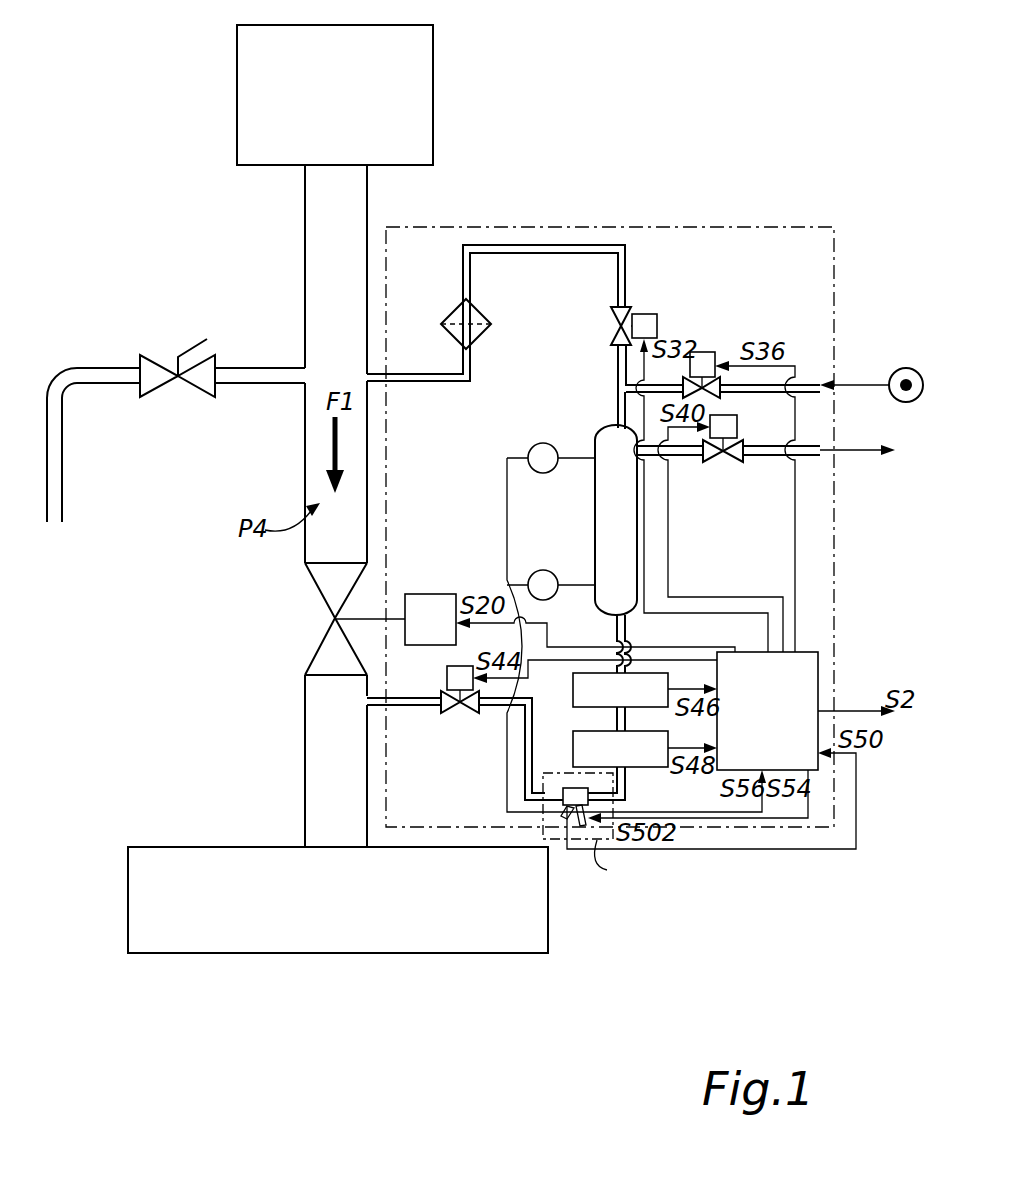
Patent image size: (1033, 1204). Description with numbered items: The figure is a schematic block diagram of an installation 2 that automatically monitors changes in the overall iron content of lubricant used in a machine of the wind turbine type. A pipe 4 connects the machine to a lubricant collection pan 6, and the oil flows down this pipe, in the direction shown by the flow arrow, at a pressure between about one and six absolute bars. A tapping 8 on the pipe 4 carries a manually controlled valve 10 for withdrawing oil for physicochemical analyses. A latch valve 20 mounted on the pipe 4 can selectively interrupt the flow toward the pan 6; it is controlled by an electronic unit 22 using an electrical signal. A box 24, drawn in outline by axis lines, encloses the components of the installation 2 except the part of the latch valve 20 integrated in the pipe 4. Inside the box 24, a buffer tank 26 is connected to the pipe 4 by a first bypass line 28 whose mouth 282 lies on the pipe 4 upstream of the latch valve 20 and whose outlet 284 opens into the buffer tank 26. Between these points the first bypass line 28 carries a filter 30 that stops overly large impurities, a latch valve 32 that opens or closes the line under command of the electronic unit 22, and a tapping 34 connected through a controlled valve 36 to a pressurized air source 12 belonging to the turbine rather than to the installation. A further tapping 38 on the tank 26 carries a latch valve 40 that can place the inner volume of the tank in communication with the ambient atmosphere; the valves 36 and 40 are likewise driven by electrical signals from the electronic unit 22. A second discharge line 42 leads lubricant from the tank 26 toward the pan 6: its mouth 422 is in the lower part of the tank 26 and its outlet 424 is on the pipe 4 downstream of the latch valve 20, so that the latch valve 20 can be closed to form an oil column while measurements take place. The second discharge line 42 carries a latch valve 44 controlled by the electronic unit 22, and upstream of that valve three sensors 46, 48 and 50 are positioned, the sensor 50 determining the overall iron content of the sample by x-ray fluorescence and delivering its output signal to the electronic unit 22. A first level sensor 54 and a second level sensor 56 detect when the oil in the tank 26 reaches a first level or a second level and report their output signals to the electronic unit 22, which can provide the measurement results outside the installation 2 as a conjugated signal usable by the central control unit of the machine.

The installation 2 is at (780, 210).
The pipe 4 is at (323, 212).
The lubricant collection pan 6 is at (338, 900).
The tapping 8 is at (287, 375).
The valve 10 is at (155, 363).
The pressurized air source 12 is at (912, 368).
The latch valve 20 is at (396, 619).
The electronic unit 22 is at (767, 711).
The box 24 is at (836, 277).
The buffer tank 26 is at (605, 532).
The first bypass line 28 is at (532, 245).
The filter 30 is at (480, 313).
The latch valve 32 is at (650, 314).
The tapping 34 is at (635, 384).
The controlled valve 36 is at (708, 352).
The tapping 38 is at (683, 457).
The latch valve 40 is at (733, 462).
The second discharge line 42 is at (527, 730).
The latch valve 44 is at (447, 679).
The sensor 46 is at (620, 690).
The sensor 48 is at (620, 749).
The sensor 50 is at (545, 791).
The first level sensor 54 is at (546, 568).
The second level sensor 56 is at (535, 448).
The mouth 282 is at (368, 382).
The outlet 284 is at (625, 433).
The mouth 422 is at (635, 618).
The outlet 424 is at (367, 708).